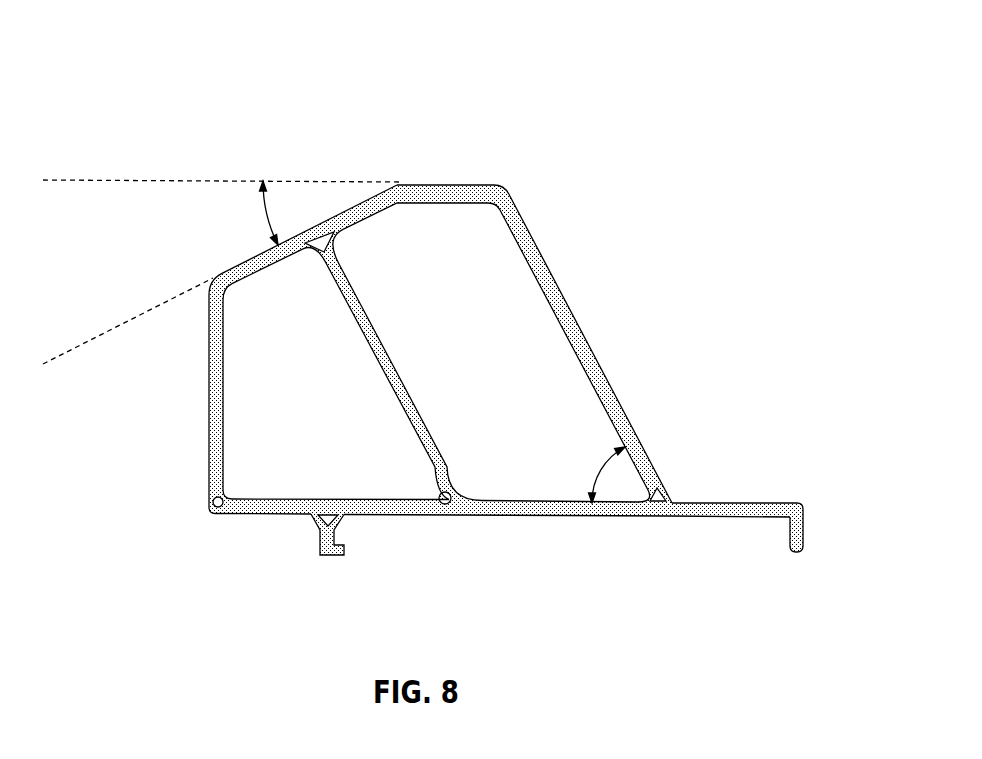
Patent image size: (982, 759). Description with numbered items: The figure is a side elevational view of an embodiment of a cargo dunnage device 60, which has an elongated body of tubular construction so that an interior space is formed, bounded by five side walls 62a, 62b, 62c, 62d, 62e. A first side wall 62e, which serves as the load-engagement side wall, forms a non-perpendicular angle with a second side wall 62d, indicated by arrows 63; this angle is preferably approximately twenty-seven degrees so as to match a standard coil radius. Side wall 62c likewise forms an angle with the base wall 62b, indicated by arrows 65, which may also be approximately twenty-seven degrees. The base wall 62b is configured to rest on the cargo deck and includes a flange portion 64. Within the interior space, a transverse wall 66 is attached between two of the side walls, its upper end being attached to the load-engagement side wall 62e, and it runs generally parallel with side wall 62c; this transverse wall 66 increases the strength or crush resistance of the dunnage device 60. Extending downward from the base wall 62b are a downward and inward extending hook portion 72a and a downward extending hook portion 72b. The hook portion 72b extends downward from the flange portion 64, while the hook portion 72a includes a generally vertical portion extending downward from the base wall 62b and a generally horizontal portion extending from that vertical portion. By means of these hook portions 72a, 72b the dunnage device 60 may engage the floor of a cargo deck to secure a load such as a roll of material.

The dunnage device 60 is at (128, 72).
The side wall 62a is at (209, 425).
The base wall 62b is at (257, 515).
The side wall 62c is at (590, 350).
The second side wall 62d is at (446, 183).
The first side wall 62e is at (343, 210).
The arrows 63 is at (264, 214).
The flange portion 64 is at (762, 503).
The arrows 65 is at (597, 472).
The transverse wall 66 is at (412, 403).
The downward and inward extending hook portion 72a is at (332, 557).
The downward extending hook portion 72b is at (805, 532).